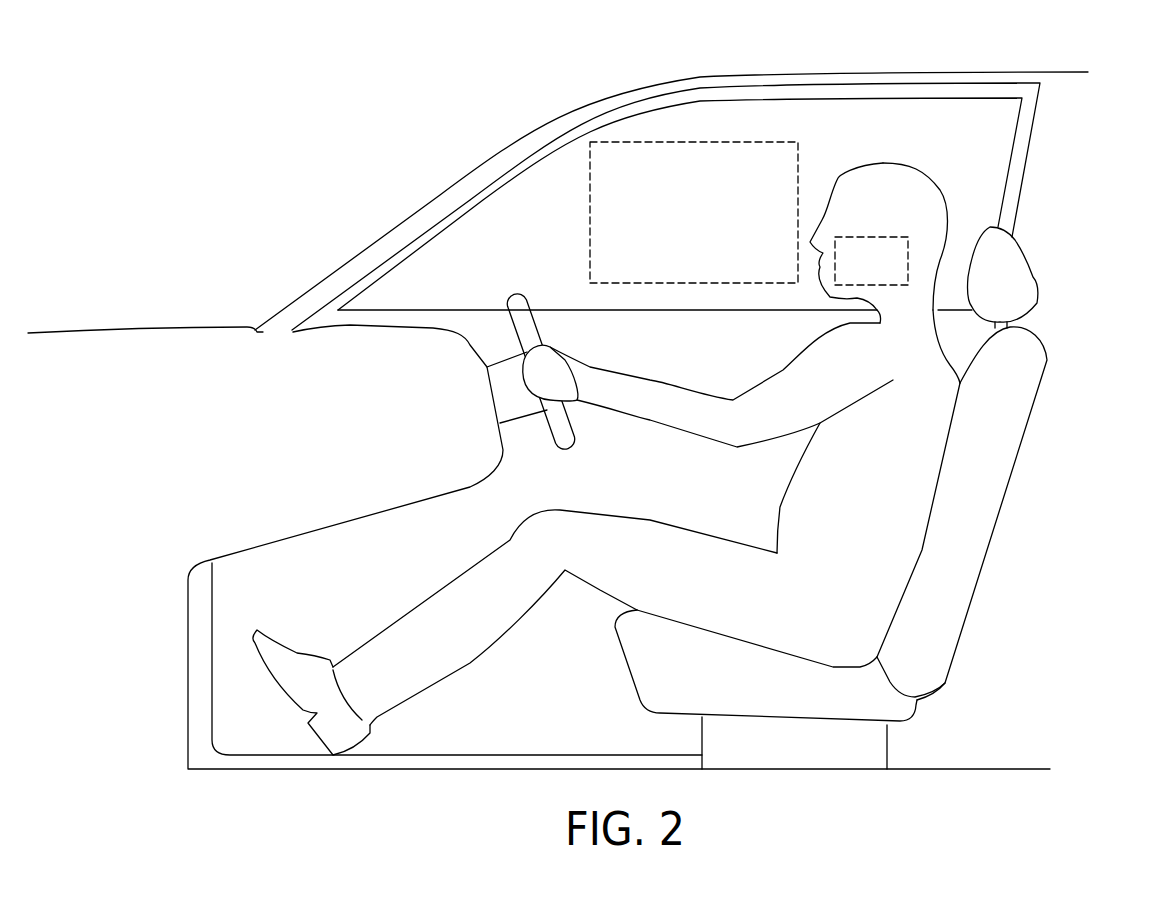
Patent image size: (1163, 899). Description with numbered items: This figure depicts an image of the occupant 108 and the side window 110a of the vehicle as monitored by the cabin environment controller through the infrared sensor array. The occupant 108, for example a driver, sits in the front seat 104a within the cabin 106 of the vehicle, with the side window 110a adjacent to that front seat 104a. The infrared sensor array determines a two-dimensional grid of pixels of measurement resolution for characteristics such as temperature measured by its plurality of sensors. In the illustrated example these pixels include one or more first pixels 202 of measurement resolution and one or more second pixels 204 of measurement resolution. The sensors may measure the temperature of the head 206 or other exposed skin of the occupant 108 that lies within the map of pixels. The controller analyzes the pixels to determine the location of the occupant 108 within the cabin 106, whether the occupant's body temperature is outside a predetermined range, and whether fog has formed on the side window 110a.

The side window 110a is at (877, 132).
The head 206 is at (918, 165).
The second pixels of measurement resolution 204 is at (674, 226).
The first pixels of measurement resolution 202 is at (851, 273).
The occupant 108 is at (650, 518).
The cabin 106 is at (772, 757).
The front seat 104a is at (1033, 440).